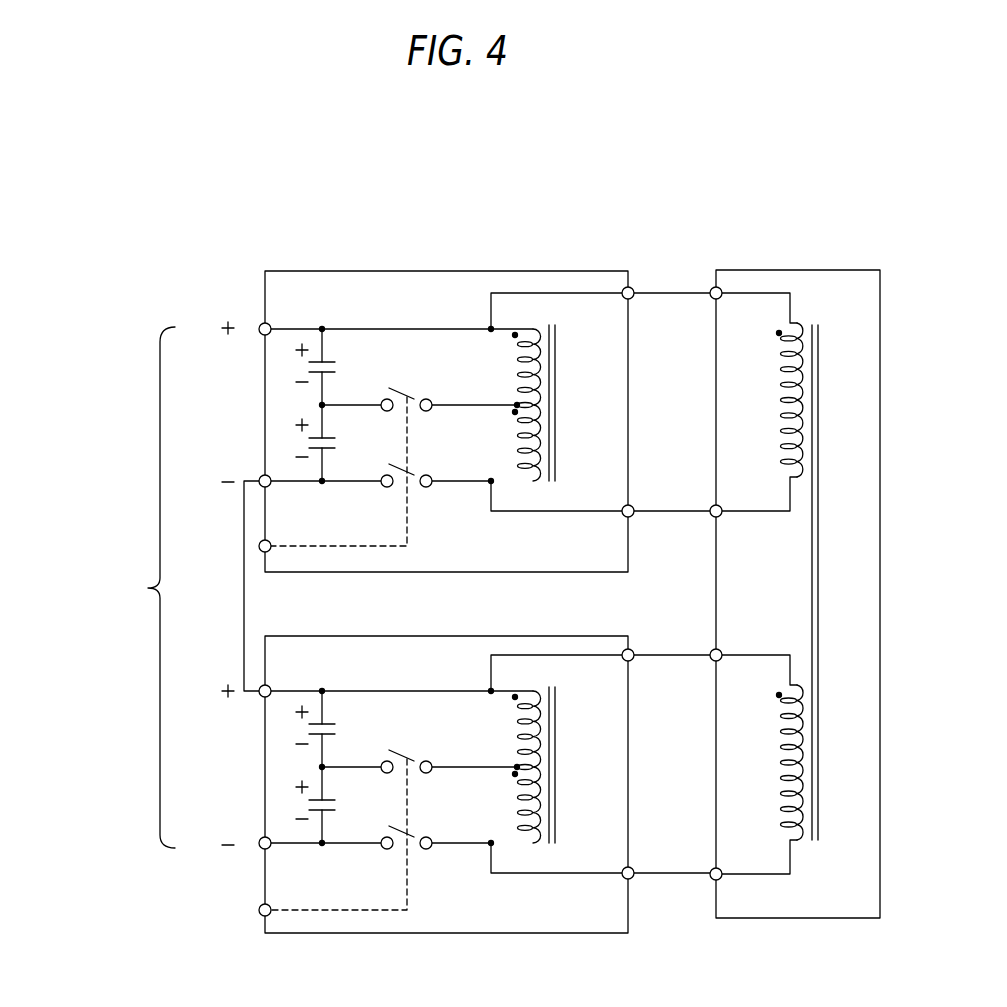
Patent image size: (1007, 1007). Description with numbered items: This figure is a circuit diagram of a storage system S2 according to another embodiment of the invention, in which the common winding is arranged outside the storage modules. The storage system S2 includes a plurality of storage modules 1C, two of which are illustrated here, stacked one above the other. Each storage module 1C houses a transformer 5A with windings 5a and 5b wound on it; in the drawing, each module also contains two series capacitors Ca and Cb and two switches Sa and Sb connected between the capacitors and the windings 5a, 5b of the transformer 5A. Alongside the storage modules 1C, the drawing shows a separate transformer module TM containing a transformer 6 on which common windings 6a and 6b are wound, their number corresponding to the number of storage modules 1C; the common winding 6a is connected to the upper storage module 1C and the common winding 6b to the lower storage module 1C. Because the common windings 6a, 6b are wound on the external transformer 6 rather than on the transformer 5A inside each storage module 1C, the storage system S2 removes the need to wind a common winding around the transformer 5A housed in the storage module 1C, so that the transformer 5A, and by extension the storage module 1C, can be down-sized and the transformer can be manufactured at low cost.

The storage system S2 is at (467, 179).
The storage module 1C is at (447, 270).
The capacitor Ca is at (327, 362).
The capacitor Cb is at (327, 438).
The switch Sa is at (435, 382).
The switch Sb is at (435, 458).
The transformer 5A is at (556, 345).
The winding 5a is at (520, 375).
The winding 5b is at (520, 449).
The transformer module TM is at (797, 270).
The transformer 6 is at (819, 340).
The common winding 6a is at (781, 402).
The common winding 6b is at (781, 764).